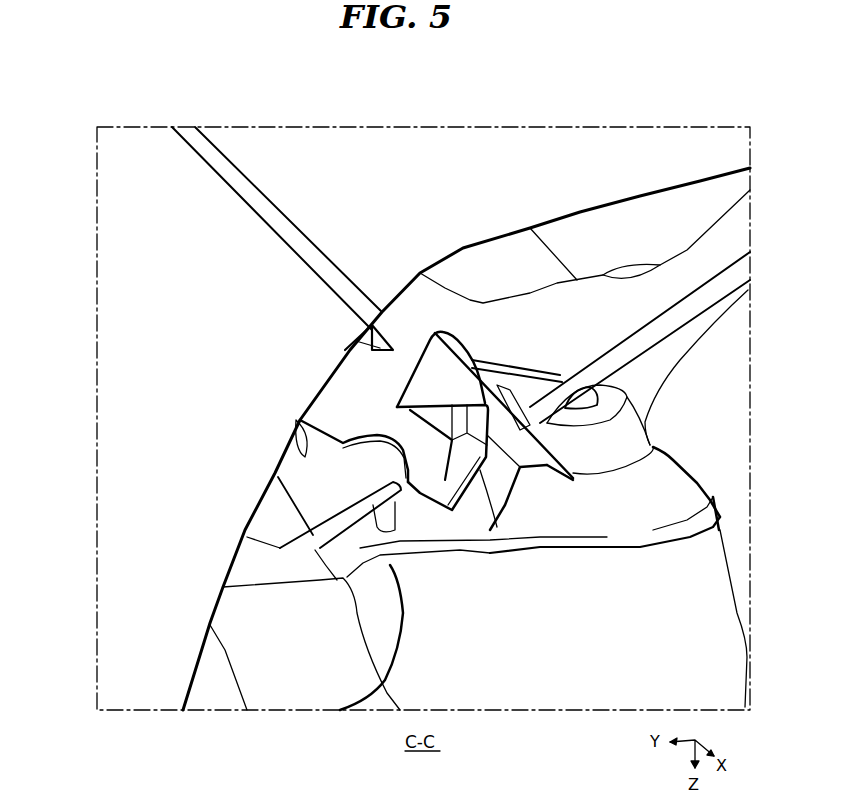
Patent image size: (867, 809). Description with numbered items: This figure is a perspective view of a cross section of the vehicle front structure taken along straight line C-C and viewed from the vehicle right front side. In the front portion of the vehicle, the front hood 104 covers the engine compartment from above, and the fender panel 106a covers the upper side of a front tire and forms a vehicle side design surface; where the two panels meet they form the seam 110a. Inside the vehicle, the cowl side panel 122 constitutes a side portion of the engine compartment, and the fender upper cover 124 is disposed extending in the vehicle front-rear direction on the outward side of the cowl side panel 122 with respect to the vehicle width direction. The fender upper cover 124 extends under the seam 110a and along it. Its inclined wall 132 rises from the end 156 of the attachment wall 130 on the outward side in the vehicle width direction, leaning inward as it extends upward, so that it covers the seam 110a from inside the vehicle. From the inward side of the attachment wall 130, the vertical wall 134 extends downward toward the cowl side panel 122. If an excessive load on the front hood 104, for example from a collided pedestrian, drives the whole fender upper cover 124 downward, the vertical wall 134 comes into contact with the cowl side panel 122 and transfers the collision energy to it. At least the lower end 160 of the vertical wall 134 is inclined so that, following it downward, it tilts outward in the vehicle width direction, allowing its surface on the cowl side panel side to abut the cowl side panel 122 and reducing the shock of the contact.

The front hood 104 is at (375, 172).
The fender panel 106a is at (133, 273).
The seam 110a is at (283, 235).
The inclined wall 132 is at (410, 320).
The fender upper cover 124 is at (463, 357).
The attachment wall 130 is at (450, 387).
The end of the attachment wall 156 is at (385, 437).
The vertical wall 134 is at (425, 510).
The lower end of the vertical wall 160 is at (500, 540).
The cowl side panel 122 is at (510, 500).